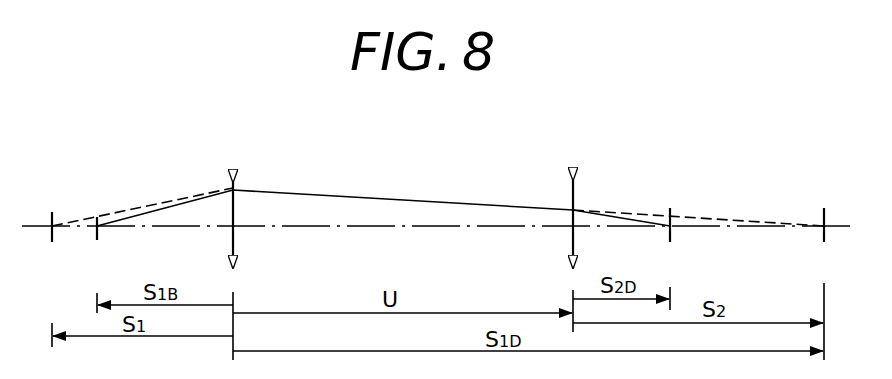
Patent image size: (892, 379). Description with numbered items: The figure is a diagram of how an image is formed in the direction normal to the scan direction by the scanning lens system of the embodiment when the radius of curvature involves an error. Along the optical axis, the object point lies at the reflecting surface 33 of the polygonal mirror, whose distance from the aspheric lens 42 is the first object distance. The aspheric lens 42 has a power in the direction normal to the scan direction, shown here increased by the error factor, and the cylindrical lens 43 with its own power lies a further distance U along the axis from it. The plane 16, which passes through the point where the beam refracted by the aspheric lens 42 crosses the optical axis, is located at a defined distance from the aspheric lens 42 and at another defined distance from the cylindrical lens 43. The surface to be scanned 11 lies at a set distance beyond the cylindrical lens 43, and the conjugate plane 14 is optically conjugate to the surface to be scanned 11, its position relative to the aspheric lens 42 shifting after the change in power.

The reflecting surface 33 is at (52, 207).
The conjugate plane 14 is at (97, 241).
The aspheric lens 42 is at (233, 150).
The cylindrical lens 43 is at (573, 144).
The surface to be scanned 11 is at (671, 205).
The plane 16 is at (821, 205).